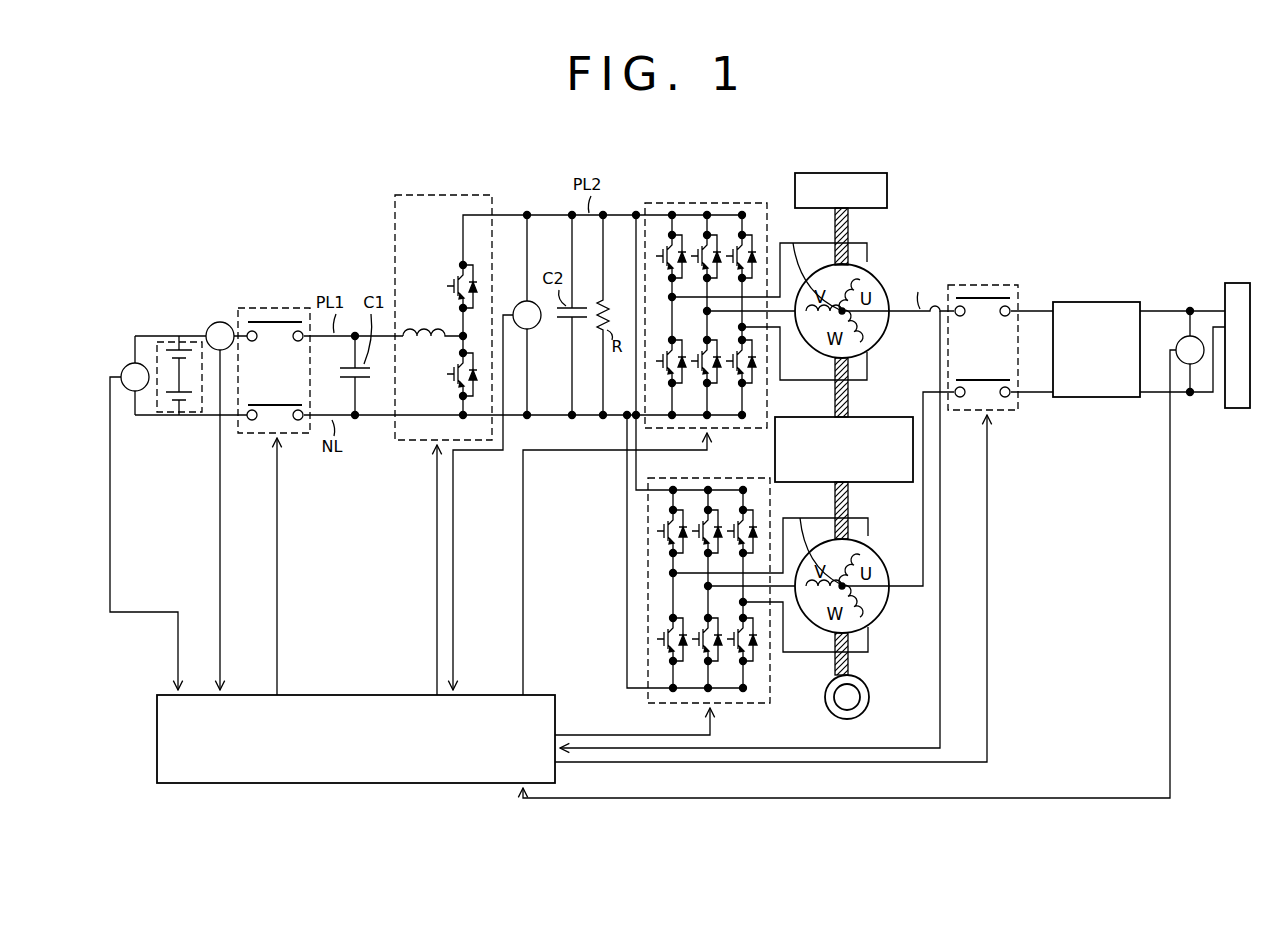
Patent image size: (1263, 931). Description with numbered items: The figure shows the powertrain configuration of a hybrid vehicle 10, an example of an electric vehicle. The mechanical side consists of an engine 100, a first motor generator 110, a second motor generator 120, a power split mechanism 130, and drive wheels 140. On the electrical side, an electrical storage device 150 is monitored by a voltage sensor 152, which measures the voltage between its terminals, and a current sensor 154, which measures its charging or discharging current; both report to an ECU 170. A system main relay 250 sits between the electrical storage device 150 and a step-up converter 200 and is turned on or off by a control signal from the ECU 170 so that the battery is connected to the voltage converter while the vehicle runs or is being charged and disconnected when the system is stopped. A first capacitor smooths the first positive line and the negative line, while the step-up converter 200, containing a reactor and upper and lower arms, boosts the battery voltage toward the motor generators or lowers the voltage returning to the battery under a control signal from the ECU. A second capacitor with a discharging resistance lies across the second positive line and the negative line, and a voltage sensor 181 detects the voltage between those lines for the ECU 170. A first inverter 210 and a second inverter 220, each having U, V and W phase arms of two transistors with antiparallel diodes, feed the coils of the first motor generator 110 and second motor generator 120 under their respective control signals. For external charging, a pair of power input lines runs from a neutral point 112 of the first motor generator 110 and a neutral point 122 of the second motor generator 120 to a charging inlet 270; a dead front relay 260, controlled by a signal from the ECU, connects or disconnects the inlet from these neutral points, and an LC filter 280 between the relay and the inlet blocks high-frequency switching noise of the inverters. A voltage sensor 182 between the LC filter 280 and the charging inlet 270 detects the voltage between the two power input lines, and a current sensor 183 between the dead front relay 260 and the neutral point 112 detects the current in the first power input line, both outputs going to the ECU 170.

The hybrid vehicle 10 is at (254, 160).
The engine 100 is at (888, 192).
The first motor generator 110 is at (878, 350).
The neutral point 112 is at (795, 247).
The second motor generator 120 is at (880, 625).
The neutral point 122 is at (800, 518).
The power split mechanism 130 is at (774, 460).
The drive wheels 140 is at (870, 697).
The electrical storage device 150 is at (176, 340).
The voltage sensor 152 is at (125, 370).
The current sensor 154 is at (220, 322).
The ECU 170 is at (357, 693).
The voltage sensor 181 is at (541, 320).
The voltage sensor 182 is at (1182, 337).
The current sensor 183 is at (939, 300).
The step-up converter 200 is at (443, 195).
The first inverter 210 is at (770, 400).
The second inverter 220 is at (772, 668).
The system main relay 250 is at (280, 307).
The dead front relay 260 is at (998, 283).
The charging inlet 270 is at (1234, 282).
The LC filter 280 is at (1094, 302).